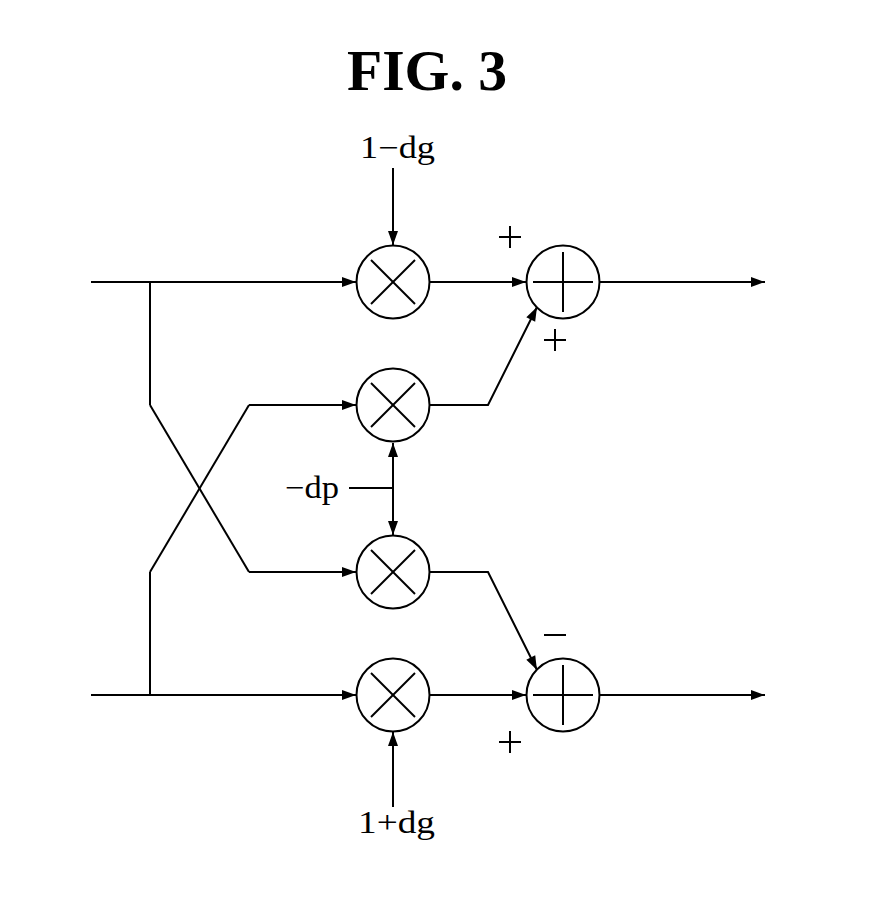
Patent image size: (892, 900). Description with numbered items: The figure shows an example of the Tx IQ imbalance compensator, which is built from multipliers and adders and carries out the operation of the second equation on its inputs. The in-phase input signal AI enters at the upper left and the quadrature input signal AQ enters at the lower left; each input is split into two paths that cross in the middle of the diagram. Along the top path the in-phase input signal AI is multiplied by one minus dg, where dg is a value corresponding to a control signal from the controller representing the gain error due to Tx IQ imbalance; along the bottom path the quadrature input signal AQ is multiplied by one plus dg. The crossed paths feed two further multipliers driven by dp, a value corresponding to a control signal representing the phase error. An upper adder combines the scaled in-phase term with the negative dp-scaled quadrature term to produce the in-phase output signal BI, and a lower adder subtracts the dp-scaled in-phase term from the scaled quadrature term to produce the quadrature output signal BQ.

The in-phase input signal AI is at (199, 421).
The quadrature input signal AQ is at (198, 556).
The in-phase output signal BI is at (704, 282).
The quadrature output signal BQ is at (710, 695).